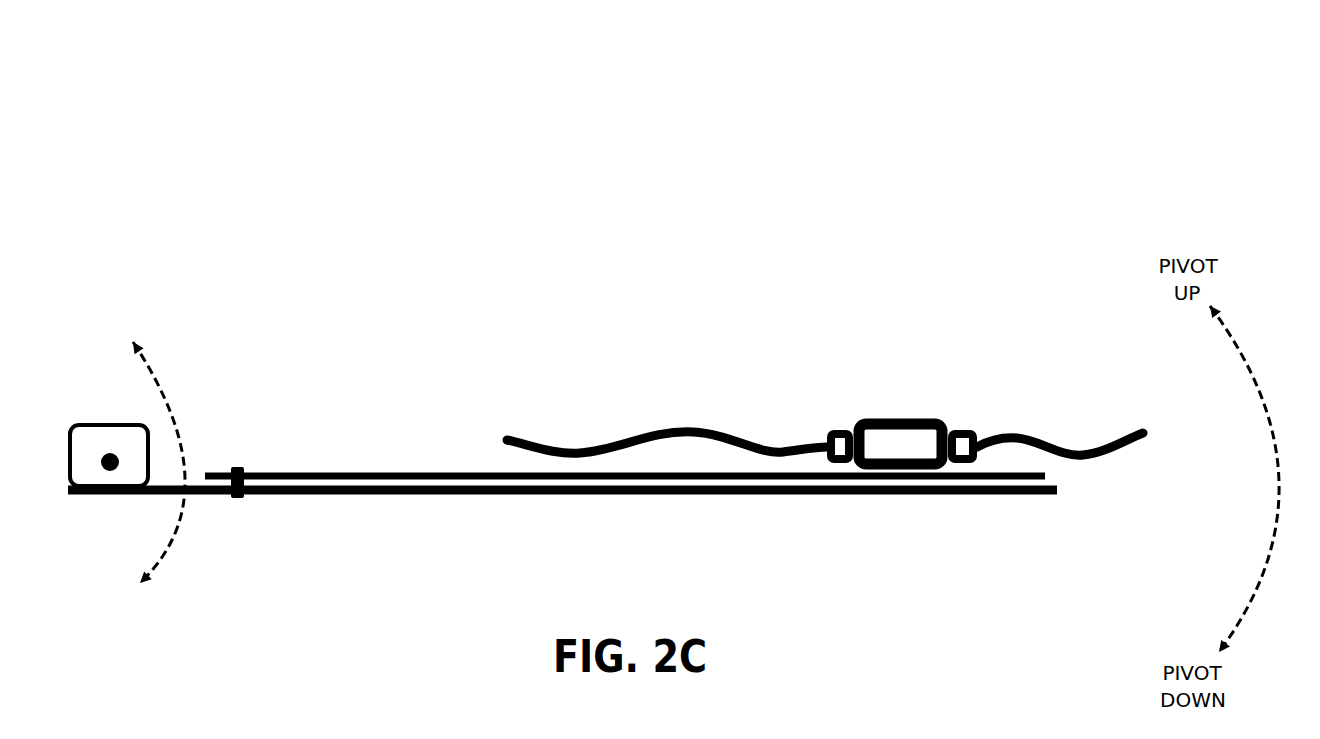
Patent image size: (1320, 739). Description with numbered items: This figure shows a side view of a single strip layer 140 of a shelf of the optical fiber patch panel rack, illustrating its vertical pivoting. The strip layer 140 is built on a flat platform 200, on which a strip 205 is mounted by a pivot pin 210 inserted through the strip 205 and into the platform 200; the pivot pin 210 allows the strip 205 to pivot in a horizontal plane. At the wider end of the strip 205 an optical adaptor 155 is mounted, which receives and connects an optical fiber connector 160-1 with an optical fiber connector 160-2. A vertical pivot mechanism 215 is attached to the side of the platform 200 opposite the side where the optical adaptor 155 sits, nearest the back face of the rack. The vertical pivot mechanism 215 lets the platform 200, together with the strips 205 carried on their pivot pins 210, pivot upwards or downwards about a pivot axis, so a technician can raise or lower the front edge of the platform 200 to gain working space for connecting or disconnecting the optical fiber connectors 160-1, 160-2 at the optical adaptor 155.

The strip layer 140 is at (1050, 108).
The optical adaptor 155 is at (903, 408).
The optical fiber connector 160-1 is at (973, 422).
The optical fiber connector 160-2 is at (835, 420).
The platform 200 is at (903, 497).
The strip 205 is at (1050, 471).
The pivot pin 210 is at (235, 455).
The vertical pivot mechanism 215 is at (99, 420).